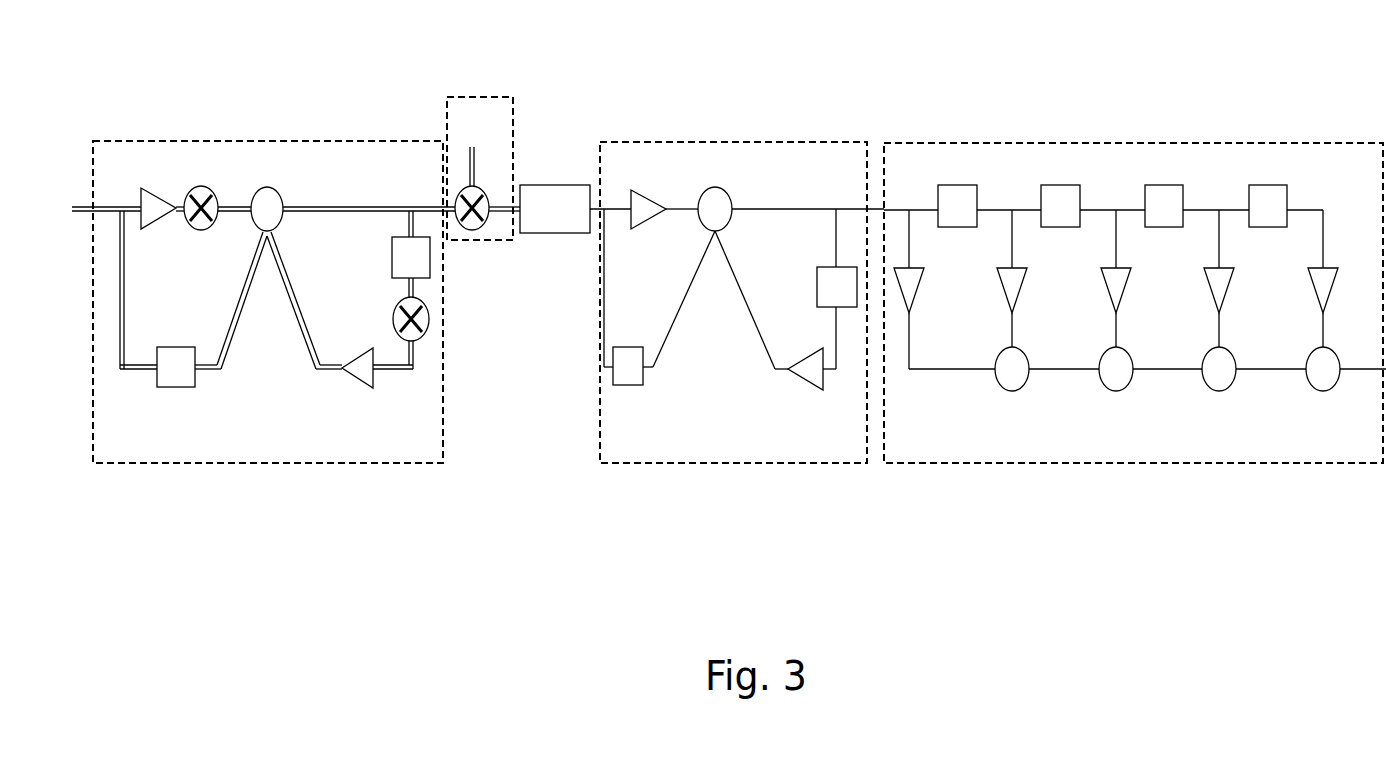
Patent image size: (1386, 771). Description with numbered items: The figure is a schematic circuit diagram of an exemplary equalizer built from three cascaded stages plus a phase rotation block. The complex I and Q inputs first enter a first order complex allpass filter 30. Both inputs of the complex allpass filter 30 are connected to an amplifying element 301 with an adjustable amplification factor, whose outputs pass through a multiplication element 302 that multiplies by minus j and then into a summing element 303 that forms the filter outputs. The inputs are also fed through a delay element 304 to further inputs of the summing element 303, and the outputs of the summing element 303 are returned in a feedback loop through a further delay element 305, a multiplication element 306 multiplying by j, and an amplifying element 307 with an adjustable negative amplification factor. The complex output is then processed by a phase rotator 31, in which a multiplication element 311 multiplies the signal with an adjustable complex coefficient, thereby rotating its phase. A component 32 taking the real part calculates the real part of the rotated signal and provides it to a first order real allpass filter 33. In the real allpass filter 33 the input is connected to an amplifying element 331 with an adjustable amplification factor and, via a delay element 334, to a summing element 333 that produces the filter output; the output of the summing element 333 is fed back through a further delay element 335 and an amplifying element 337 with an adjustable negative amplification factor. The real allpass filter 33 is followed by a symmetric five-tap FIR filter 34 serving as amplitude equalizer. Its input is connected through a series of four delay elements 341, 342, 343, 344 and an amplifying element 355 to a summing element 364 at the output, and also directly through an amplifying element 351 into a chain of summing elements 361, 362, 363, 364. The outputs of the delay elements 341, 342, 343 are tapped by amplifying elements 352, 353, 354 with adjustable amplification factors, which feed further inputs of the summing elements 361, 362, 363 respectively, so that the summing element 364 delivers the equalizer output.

The complex allpass filter 30 is at (271, 140).
The phase rotator 31 is at (487, 97).
The component taking the real part 32 is at (553, 185).
The real allpass filter 33 is at (741, 142).
The FIR filter 34 is at (1135, 143).
The amplifying element 301 is at (153, 217).
The multiplication element 302 is at (205, 230).
The summing element 303 is at (290, 195).
The delay element 304 is at (155, 385).
The further delay element 305 is at (393, 255).
The multiplication element 306 is at (397, 300).
The amplifying element 307 is at (352, 377).
The multiplication element 311 is at (473, 228).
The amplifying element 331 is at (650, 225).
The summing element 333 is at (735, 193).
The delay element 334 is at (628, 383).
The further delay element 335 is at (818, 278).
The amplifying element 337 is at (797, 377).
The delay element 341 is at (955, 185).
The delay element 342 is at (1058, 185).
The delay element 343 is at (1162, 185).
The delay element 344 is at (1265, 185).
The amplifying element 351 is at (920, 265).
The amplifying element 352 is at (1023, 265).
The amplifying element 353 is at (1127, 265).
The amplifying element 354 is at (1230, 265).
The amplifying element 355 is at (1333, 268).
The summing element 361 is at (1015, 390).
The summing element 362 is at (1119, 390).
The summing element 363 is at (1222, 390).
The summing element 364 is at (1326, 390).